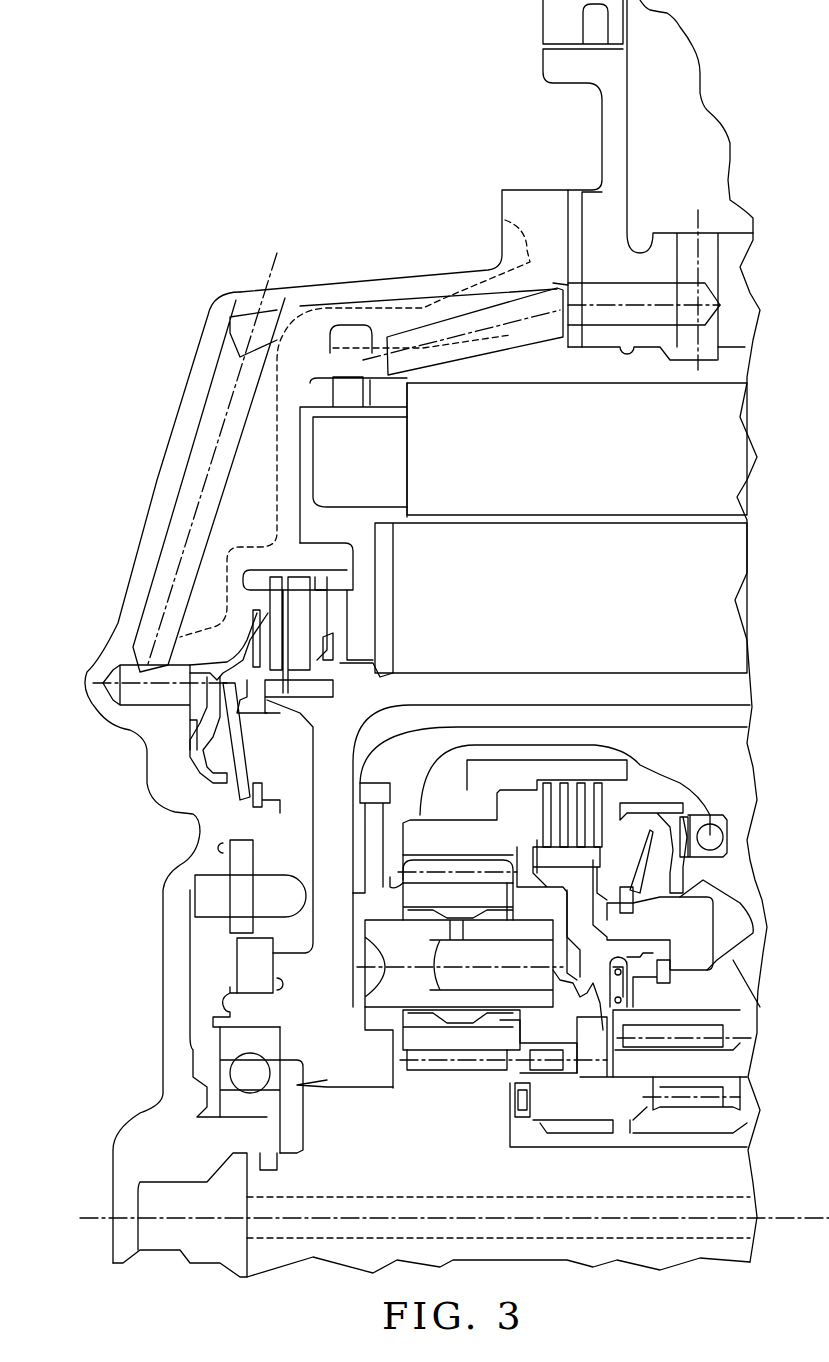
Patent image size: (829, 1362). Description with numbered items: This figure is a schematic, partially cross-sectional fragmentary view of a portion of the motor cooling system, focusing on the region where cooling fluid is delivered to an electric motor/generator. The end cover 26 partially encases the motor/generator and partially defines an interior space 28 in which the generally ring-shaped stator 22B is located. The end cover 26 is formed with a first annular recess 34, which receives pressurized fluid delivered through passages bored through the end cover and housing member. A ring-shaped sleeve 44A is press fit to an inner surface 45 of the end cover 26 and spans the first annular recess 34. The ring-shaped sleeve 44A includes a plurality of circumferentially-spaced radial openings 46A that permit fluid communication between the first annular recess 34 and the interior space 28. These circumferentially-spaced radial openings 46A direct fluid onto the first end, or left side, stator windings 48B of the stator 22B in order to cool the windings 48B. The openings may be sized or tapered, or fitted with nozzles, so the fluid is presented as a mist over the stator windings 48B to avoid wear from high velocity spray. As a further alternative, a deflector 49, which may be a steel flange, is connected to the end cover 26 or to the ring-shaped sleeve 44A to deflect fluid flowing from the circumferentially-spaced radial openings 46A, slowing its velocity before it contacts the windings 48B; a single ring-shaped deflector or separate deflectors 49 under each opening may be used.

The stator 22B is at (523, 453).
The end cover 26 is at (123, 580).
The interior space 28 is at (322, 530).
The first annular recess 34 is at (327, 378).
The ring-shaped sleeve 44A is at (312, 390).
The inner surface 45 is at (400, 387).
The circumferentially-spaced radial openings 46A is at (300, 408).
The stator windings 48B is at (307, 467).
The deflector 49 is at (313, 433).